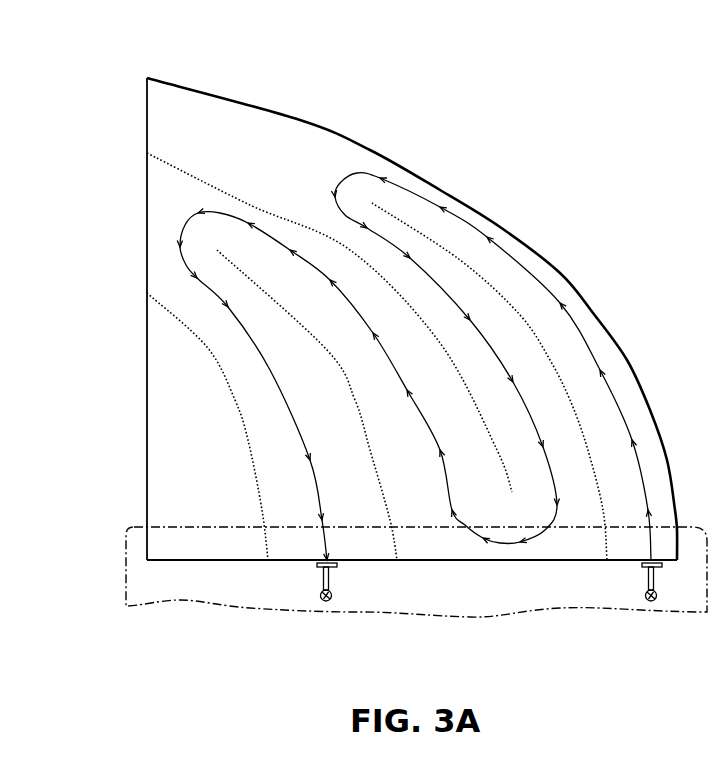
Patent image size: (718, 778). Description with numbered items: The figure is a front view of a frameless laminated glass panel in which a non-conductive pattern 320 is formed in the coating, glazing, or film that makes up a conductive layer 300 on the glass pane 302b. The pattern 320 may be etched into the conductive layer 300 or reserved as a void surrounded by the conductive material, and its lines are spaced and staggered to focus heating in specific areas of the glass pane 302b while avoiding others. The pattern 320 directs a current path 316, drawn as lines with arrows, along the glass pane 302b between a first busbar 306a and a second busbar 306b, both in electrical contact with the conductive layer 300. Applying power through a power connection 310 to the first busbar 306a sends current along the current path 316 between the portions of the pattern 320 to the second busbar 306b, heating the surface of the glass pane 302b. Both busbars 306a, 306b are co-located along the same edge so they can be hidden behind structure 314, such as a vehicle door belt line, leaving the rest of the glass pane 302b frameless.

The conductive layer 300 is at (625, 387).
The glass pane 302b is at (327, 125).
The first busbar 306a is at (643, 565).
The second busbar 306b is at (318, 565).
The power connection 310 is at (330, 600).
The structure 314 is at (470, 618).
The current path 316 is at (417, 193).
The non-conductive pattern 320 is at (217, 170).